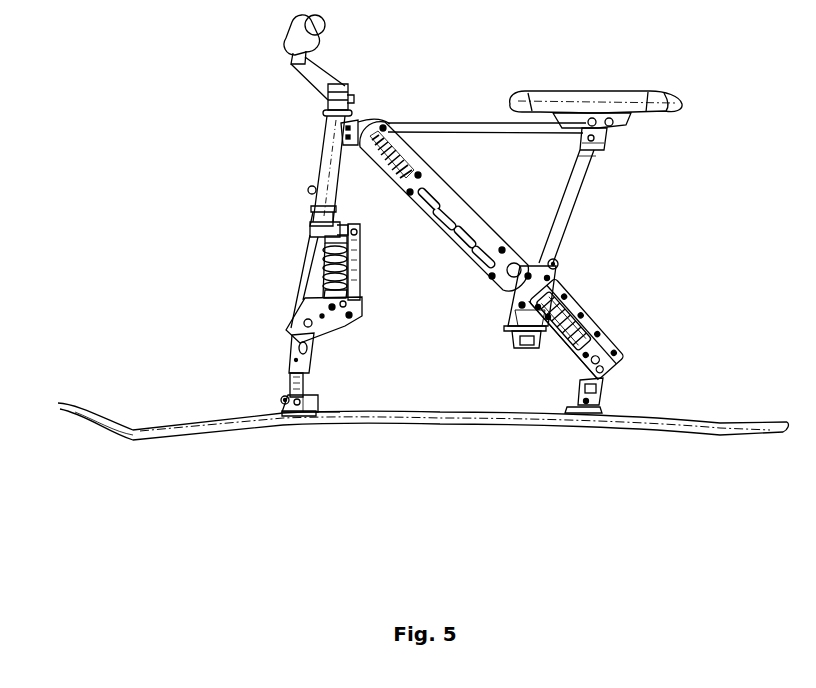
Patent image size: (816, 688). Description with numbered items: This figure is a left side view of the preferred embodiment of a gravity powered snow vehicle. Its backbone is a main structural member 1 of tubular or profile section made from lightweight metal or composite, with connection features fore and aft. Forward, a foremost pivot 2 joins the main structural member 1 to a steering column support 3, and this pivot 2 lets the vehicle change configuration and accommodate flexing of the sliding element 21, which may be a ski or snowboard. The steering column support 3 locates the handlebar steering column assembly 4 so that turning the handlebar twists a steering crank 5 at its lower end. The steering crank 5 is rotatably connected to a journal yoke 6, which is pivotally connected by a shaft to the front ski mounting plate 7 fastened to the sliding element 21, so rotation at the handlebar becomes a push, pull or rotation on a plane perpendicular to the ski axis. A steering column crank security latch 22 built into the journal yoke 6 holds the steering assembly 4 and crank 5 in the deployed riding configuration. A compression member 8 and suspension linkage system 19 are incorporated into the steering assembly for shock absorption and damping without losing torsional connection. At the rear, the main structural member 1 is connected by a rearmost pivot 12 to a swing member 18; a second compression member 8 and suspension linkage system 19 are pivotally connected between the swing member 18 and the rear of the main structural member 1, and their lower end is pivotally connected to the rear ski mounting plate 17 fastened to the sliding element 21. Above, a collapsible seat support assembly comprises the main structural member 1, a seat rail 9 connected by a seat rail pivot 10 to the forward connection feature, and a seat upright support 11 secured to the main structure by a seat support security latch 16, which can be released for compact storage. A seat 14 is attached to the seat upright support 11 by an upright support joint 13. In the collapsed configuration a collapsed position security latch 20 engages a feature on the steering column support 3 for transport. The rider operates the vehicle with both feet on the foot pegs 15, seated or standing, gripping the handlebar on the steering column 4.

The main structural member 1 is at (445, 200).
The foremost pivot 2 is at (361, 125).
The steering column support 3 is at (322, 170).
The handlebar steering column assembly 4 is at (308, 65).
The steering crank 5 is at (293, 342).
The journal yoke 6 is at (313, 397).
The front ski mounting plate 7 is at (305, 406).
The compression member 8 is at (344, 262).
The seat rail 9 is at (456, 131).
The seat rail pivot 10 is at (388, 122).
The seat upright support 11 is at (569, 182).
The rearmost pivot 12 is at (531, 310).
The upright support joint 13 is at (602, 151).
The seat 14 is at (592, 95).
The foot peg 15 is at (509, 333).
The seat support security latch 16 is at (529, 266).
The rear ski mounting plate 17 is at (598, 406).
The swing member 18 is at (611, 355).
The suspension linkage system 19 is at (361, 279).
The collapsed position security latch 20 is at (558, 265).
The sliding element 21 is at (433, 426).
The steering column crank security latch 22 is at (289, 390).